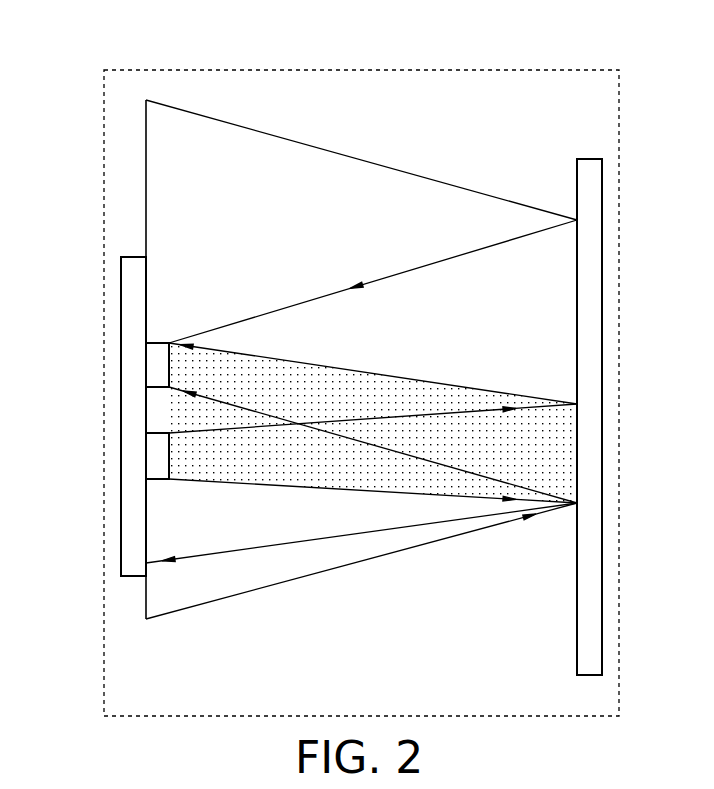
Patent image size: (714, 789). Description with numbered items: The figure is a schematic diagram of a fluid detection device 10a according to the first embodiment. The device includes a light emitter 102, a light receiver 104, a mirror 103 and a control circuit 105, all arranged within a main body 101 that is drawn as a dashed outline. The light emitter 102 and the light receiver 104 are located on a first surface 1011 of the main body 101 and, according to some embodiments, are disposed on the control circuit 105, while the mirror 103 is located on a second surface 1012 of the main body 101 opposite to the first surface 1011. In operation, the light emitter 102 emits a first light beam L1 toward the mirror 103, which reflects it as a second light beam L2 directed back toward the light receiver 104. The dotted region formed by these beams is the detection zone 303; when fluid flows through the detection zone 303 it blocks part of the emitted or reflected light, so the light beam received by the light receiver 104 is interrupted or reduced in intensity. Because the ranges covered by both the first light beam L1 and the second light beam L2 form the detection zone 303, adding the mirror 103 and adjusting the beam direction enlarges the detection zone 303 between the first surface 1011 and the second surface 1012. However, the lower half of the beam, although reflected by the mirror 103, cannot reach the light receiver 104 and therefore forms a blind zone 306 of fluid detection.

The fluid detection device 10a is at (84, 84).
The main body 101 is at (104, 181).
The first surface 1011 is at (152, 296).
The second surface 1012 is at (573, 173).
The light emitter 102 is at (157, 457).
The mirror 103 is at (587, 325).
The light receiver 104 is at (158, 368).
The control circuit 105 is at (137, 507).
The first light beam L1 is at (213, 430).
The second light beam L2 is at (405, 377).
The detection zone 303 is at (468, 450).
The blind zone 306 is at (252, 535).